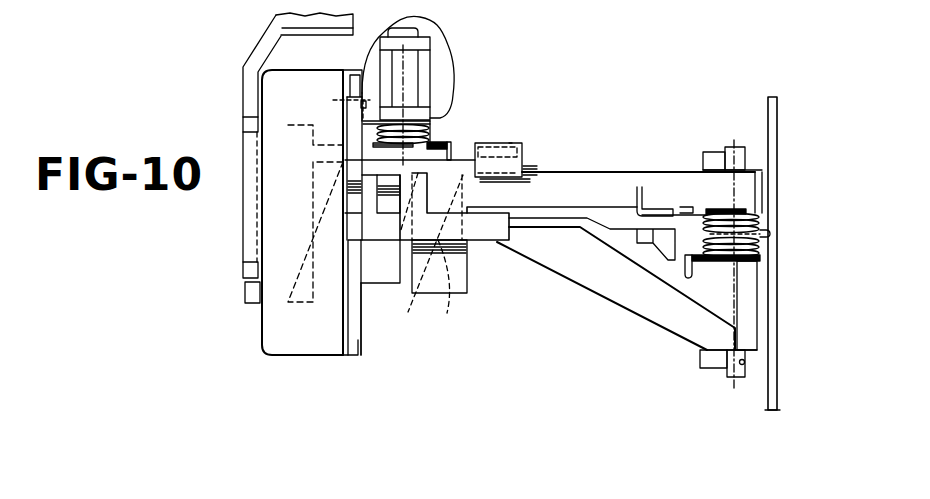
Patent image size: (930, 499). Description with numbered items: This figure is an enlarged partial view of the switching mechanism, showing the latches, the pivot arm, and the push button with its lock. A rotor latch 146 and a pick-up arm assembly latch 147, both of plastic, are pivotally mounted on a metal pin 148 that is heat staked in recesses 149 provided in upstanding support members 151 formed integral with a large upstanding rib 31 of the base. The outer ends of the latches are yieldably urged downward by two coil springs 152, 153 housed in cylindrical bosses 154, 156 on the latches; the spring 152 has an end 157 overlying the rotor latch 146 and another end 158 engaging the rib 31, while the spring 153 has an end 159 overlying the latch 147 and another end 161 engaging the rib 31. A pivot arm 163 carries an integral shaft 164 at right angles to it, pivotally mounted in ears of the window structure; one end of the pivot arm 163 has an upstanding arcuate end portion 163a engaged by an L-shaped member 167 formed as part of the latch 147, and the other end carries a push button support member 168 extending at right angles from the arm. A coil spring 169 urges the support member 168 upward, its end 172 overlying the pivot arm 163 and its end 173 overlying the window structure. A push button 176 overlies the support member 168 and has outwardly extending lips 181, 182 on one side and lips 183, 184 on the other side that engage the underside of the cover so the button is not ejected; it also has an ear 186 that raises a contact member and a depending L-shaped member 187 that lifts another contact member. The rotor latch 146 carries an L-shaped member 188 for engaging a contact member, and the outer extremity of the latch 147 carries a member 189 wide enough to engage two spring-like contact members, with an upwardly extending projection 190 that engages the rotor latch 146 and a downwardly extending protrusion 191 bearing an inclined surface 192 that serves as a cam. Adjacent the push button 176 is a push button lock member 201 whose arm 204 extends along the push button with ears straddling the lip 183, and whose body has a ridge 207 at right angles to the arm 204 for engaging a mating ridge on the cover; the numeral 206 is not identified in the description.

The upstanding rib 31 is at (776, 123).
The rotor latch 146 is at (643, 309).
The pick-up arm assembly latch 147 is at (604, 170).
The metal pin 148 is at (740, 147).
The recesses 149 is at (745, 361).
The upstanding support members 151 is at (708, 152).
The coil spring 152 is at (757, 259).
The coil spring 153 is at (757, 220).
The cylindrical boss 154 is at (752, 285).
The cylindrical boss 156 is at (723, 212).
The spring end 157 is at (690, 278).
The spring end 158 is at (762, 243).
The spring end 159 is at (642, 187).
The spring end 161 is at (770, 234).
The pivot arm 163 is at (368, 146).
The upstanding arcuate end portion 163a is at (510, 143).
The shaft 164 is at (428, 48).
The L-shaped member 167 is at (513, 167).
The push button support member 168 is at (347, 328).
The coil spring 169 is at (433, 133).
The spring end 172 is at (452, 143).
The spring end 173 is at (367, 100).
The push button 176 is at (297, 337).
The lip 181 is at (356, 73).
The lip 182 is at (362, 347).
The lip 183 is at (250, 203).
The lip 184 is at (247, 303).
The ear 186 is at (387, 278).
The depending L-shaped member 187 is at (345, 193).
The L-shaped member 188 is at (377, 207).
The member 189 is at (460, 278).
The upwardly extending projection 190 is at (387, 240).
The downwardly extending protrusion 191 is at (417, 263).
The inclined surface 192 is at (458, 285).
The push button lock member 201 is at (272, 20).
The arm 204 is at (243, 83).
The tabs 206 is at (243, 125).
The ridge 207 is at (308, 28).